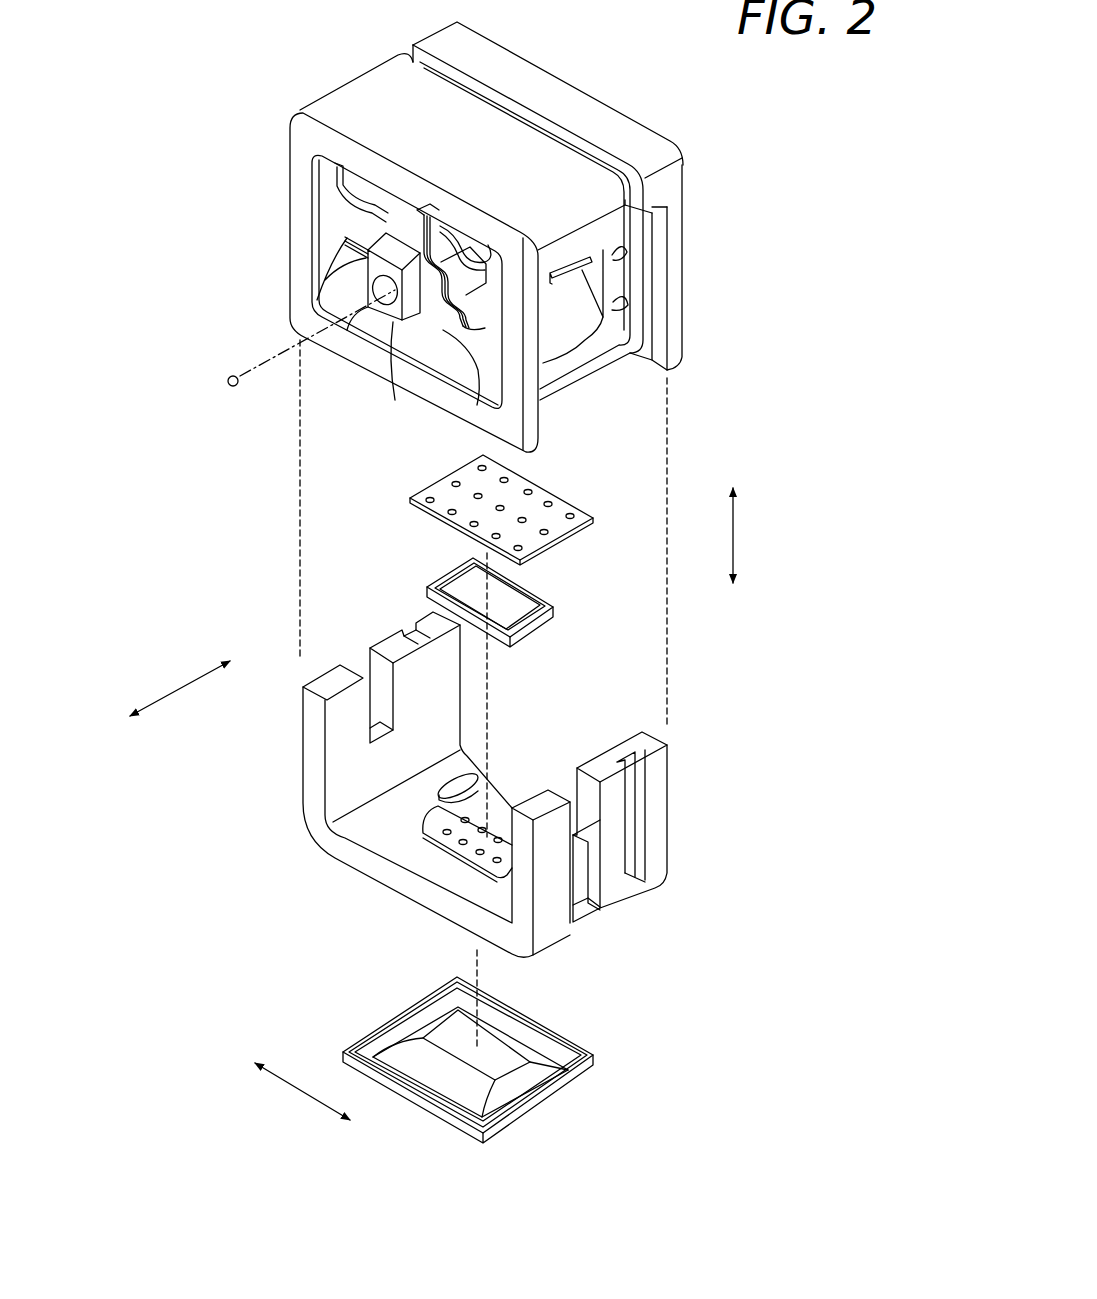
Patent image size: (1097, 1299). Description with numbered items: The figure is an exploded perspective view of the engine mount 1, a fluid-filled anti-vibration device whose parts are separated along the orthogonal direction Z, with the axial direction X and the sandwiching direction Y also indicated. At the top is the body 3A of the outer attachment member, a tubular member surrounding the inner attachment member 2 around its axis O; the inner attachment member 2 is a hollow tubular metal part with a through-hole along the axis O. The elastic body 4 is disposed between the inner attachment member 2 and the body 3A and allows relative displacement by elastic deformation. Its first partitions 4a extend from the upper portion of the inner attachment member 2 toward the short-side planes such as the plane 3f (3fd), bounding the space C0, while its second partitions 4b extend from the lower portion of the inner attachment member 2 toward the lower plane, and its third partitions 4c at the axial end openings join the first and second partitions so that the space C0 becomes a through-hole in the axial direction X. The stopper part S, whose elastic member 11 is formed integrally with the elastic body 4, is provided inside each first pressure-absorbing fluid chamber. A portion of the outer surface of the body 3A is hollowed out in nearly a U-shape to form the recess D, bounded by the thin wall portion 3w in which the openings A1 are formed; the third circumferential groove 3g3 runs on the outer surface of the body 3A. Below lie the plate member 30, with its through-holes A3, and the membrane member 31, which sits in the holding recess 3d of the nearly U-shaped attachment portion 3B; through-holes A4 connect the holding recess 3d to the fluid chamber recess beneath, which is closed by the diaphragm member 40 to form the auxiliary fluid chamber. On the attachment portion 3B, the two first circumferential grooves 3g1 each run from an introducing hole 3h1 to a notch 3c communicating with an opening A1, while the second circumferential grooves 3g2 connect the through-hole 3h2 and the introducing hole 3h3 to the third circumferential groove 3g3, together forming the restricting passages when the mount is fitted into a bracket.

The engine mount 1 is at (740, 104).
The inner attachment member 2 is at (406, 316).
The body 3A is at (514, 237).
The attachment portion 3B is at (493, 772).
The notch 3c is at (531, 772).
The holding recess 3d is at (446, 838).
The plane (3fd) 3f is at (623, 312).
The first circumferential groove 3g1 is at (370, 723).
The second circumferential groove 3g2 is at (406, 632).
The third circumferential groove 3g3 is at (548, 124).
The introducing hole 3h1 is at (580, 910).
The through-hole 3h2 is at (451, 781).
The introducing hole 3h3 is at (632, 880).
The thin wall portion 3w is at (645, 326).
The elastic body 4 is at (474, 282).
The first partition 4a is at (378, 200).
The second partition 4b is at (618, 285).
The third partition 4c is at (333, 292).
The elastic member 11 is at (564, 284).
The plate member 30 is at (520, 509).
The membrane member 31 is at (538, 625).
The diaphragm member 40 is at (402, 1010).
The opening A1 is at (568, 363).
The through-hole A3 is at (530, 492).
The through-hole A4 is at (446, 837).
The space C0 is at (415, 207).
The recess D is at (643, 364).
The axis O is at (311, 338).
The stopper part S is at (571, 260).
The axial direction X is at (180, 688).
The sandwiching direction Y is at (302, 1091).
The orthogonal direction Z is at (742, 535).